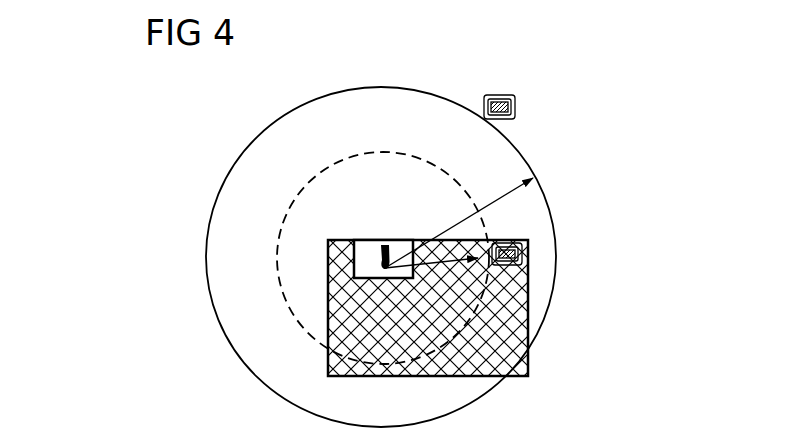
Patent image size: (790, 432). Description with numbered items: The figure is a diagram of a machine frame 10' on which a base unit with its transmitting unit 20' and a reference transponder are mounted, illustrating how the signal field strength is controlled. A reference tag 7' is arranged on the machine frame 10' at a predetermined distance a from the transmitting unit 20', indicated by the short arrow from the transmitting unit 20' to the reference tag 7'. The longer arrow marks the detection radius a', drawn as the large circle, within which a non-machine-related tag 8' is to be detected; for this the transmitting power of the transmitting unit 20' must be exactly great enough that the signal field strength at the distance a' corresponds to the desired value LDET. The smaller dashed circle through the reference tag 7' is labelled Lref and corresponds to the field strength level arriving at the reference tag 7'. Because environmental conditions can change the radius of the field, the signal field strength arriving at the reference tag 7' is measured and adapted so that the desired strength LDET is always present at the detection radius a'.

The desired signal field strength at detection radius LDET is at (379, 87).
The reference range Lref is at (276, 257).
The machine frame 10' is at (465, 308).
The transmitting unit 20' is at (373, 230).
The non-machine-related tag 8' is at (499, 83).
The reference tag 7' is at (547, 259).
The detection radius a' is at (459, 223).
The distance a is at (431, 277).